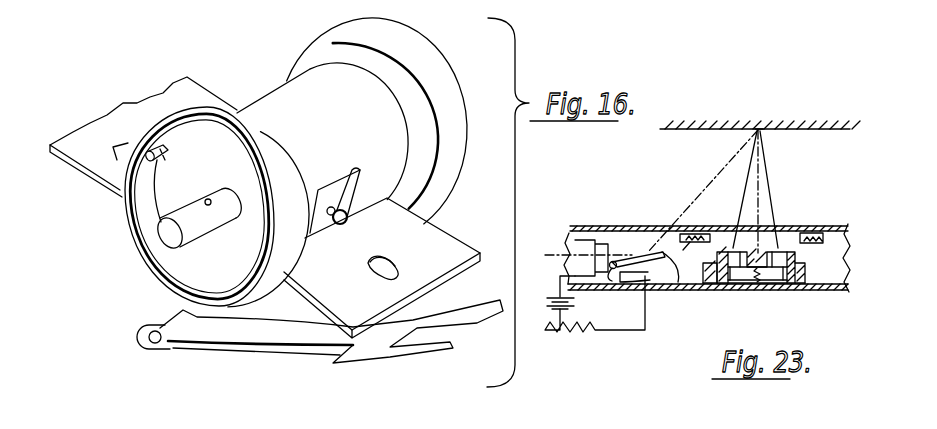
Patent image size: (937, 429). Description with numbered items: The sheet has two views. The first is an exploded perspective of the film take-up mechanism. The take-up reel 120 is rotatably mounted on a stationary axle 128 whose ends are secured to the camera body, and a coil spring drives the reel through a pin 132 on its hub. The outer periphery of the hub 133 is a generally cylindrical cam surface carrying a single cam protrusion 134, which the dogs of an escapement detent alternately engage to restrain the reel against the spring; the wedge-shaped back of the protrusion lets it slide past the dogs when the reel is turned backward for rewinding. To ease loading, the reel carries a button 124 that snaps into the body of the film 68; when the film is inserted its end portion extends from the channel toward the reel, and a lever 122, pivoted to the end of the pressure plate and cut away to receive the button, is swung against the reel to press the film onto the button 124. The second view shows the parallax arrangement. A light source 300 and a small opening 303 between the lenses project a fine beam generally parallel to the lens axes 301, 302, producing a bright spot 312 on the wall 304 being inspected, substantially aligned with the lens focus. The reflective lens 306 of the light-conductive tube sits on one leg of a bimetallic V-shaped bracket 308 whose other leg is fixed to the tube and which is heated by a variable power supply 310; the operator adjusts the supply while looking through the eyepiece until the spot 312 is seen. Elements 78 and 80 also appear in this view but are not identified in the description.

In FIG. 16, the take-up reel 120 is at (318, 90).
In FIG. 16, the hub 133 is at (207, 125).
In FIG. 16, the cam protrusion 134 is at (120, 158).
In FIG. 16, the pin 132 is at (172, 183).
In FIG. 16, the stationary axle 128 is at (172, 238).
In FIG. 16, the button 124 is at (352, 166).
In FIG. 16, the film 68 is at (447, 240).
In FIG. 16, the lever 122 is at (353, 355).
In FIG. 23, the wall 304 is at (700, 133).
In FIG. 23, the spot 312 is at (762, 132).
In FIG. 23, the lens axis 301 is at (770, 187).
In FIG. 23, the lens axis 302 is at (738, 192).
In FIG. 23, the small opening 303 is at (773, 232).
In FIG. 23, the reflective lens 306 is at (631, 253).
In FIG. 23, the guide 78 is at (690, 260).
In FIG. 23, the base 80 is at (820, 243).
In FIG. 23, the variable power supply 310 is at (579, 305).
In FIG. 23, the bimetallic V shaped bracket 308 is at (666, 267).
In FIG. 23, the light source 300 is at (803, 287).